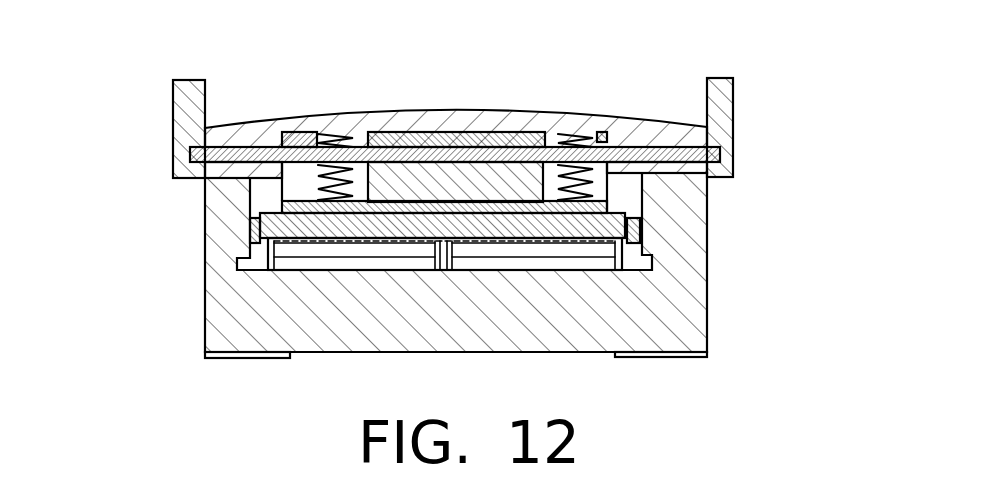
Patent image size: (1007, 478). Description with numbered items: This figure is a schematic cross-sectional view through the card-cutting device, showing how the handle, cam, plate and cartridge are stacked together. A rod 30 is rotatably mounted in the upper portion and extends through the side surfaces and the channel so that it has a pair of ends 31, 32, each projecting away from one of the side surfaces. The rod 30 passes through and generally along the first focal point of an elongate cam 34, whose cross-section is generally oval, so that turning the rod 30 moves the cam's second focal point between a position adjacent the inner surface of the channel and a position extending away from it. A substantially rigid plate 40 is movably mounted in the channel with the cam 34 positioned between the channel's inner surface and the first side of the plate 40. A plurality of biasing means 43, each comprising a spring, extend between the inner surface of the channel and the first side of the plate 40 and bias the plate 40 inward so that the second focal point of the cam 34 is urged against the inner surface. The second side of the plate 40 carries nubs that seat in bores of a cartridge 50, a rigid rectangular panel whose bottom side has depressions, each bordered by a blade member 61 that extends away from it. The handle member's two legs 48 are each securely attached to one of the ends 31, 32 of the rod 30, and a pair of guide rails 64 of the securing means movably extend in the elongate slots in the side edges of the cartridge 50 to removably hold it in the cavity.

The rod 30 is at (243, 147).
The end of the rod 31 is at (190, 157).
The end of the rod 32 is at (717, 163).
The elongate cam 34 is at (472, 138).
The plate 40 is at (283, 203).
The biasing means 43 is at (363, 146).
The legs 48 is at (180, 98).
The cartridge 50 is at (262, 256).
The blade member 61 is at (272, 266).
The guide rails 64 is at (642, 232).